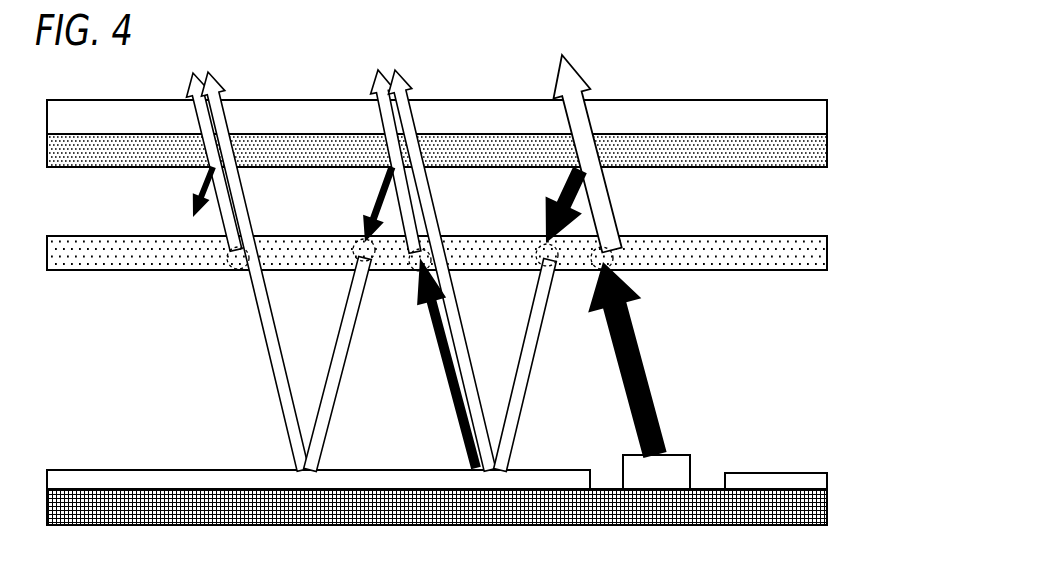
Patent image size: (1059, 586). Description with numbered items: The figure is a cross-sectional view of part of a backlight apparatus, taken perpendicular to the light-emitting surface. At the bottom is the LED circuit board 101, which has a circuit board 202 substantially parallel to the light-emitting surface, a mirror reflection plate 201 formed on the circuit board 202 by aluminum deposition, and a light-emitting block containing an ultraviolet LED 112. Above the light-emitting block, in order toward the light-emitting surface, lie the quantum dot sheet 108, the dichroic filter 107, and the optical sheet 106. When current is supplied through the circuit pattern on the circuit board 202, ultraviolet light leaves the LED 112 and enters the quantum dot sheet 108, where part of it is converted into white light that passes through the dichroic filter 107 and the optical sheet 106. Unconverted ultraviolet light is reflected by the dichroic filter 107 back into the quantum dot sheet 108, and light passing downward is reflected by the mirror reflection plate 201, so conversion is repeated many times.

The LED circuit board 101 is at (840, 438).
The optical sheet 106 is at (810, 118).
The dichroic filter 107 is at (810, 152).
The quantum dot sheet 108 is at (810, 256).
The LED 112 is at (676, 466).
The mirror reflection plate 201 is at (93, 481).
The circuit board 202 is at (812, 506).